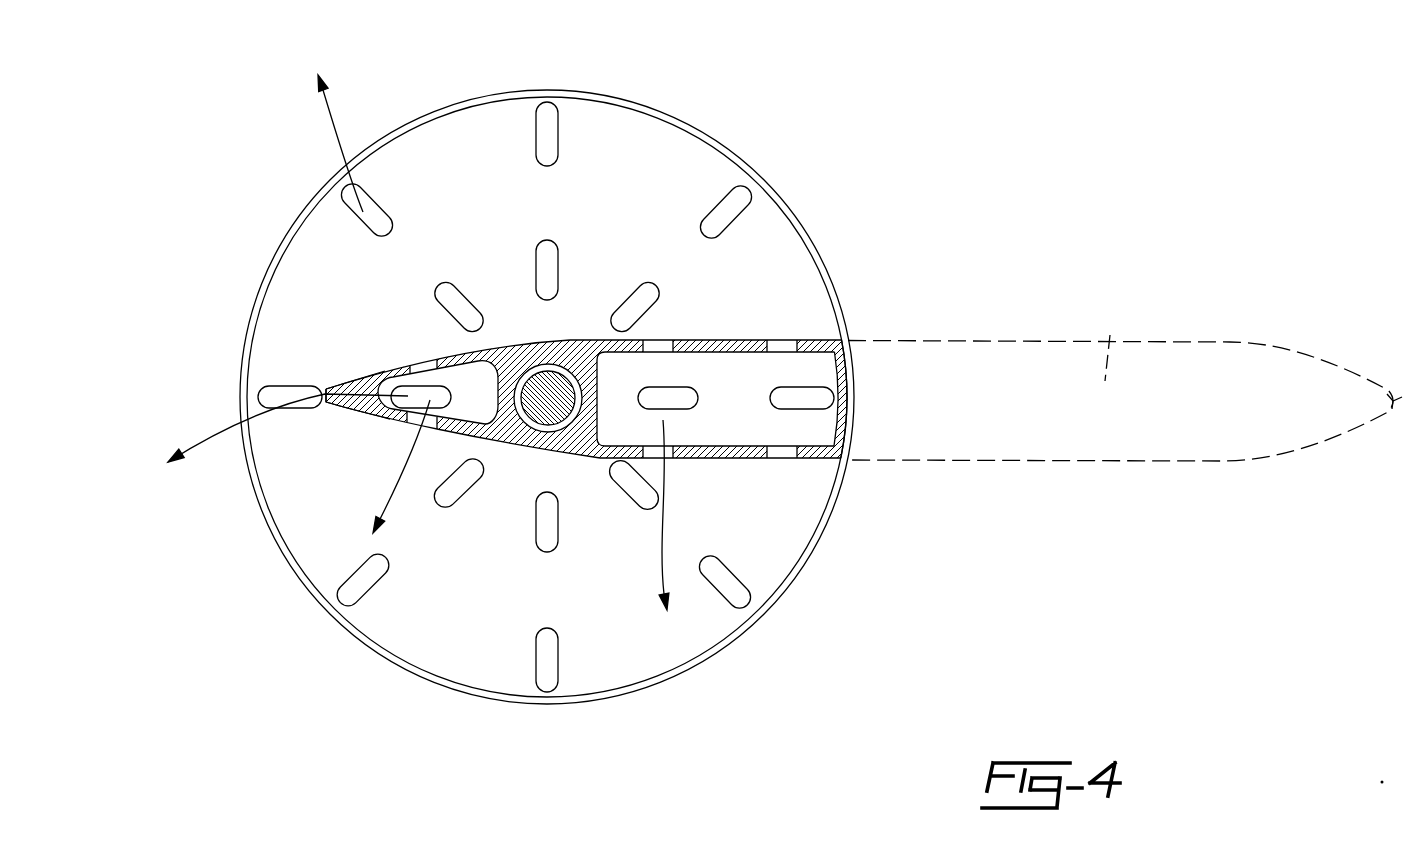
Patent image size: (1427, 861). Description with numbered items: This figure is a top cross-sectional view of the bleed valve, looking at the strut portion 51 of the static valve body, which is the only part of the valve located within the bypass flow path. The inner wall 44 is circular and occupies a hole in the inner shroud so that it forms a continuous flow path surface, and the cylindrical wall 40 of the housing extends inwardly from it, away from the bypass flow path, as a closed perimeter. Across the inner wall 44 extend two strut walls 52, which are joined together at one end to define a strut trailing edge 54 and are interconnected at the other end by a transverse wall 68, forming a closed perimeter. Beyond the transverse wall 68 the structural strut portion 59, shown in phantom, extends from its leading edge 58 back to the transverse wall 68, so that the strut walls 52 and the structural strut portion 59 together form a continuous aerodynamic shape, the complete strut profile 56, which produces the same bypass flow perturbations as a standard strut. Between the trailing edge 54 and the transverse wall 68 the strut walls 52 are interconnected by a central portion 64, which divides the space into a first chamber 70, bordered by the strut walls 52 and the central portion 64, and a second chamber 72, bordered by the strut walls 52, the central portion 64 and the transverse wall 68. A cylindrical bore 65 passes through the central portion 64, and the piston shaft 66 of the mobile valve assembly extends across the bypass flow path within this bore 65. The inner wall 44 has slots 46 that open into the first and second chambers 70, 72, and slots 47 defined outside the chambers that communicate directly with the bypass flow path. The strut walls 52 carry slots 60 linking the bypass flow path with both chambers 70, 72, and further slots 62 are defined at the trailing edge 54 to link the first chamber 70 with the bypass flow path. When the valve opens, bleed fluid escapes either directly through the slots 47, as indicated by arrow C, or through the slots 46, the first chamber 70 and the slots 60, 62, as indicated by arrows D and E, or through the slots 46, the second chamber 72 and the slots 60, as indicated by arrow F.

The cylindrical wall 40 is at (830, 300).
The inner wall 44 is at (770, 267).
The slots 46 is at (833, 397).
The slots 47 is at (737, 203).
The strut portion 51 is at (584, 472).
The strut walls 52 is at (384, 373).
The strut trailing edge 54 is at (335, 406).
The complete strut profile 56 is at (1069, 474).
The leading edge 58 is at (1405, 396).
The structural strut portion 59 is at (1110, 335).
The slots 60 is at (413, 375).
The slots 62 is at (328, 385).
The central portion 64 is at (587, 340).
The cylindrical bore 65 is at (556, 440).
The piston shaft 66 is at (527, 450).
The transverse wall 68 is at (850, 428).
The first chamber 70 is at (473, 402).
The second chamber 72 is at (735, 423).
The arrow C is at (328, 117).
The arrow D is at (197, 440).
The arrow E is at (398, 489).
The arrow F is at (658, 565).